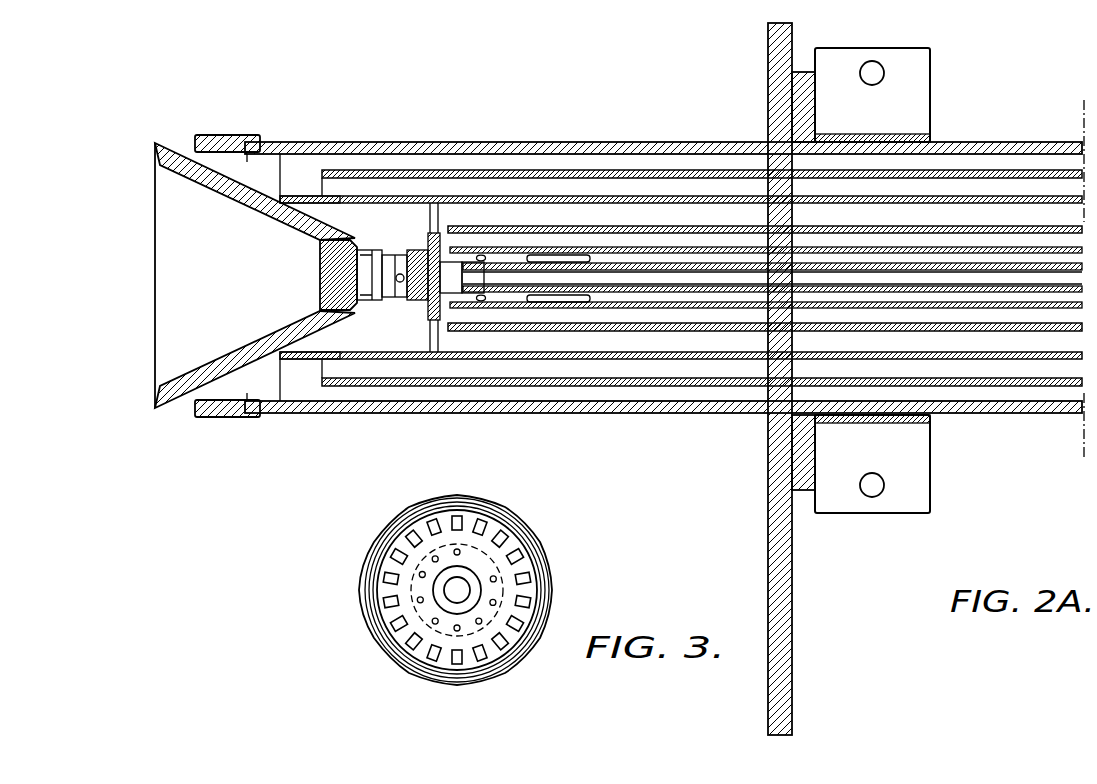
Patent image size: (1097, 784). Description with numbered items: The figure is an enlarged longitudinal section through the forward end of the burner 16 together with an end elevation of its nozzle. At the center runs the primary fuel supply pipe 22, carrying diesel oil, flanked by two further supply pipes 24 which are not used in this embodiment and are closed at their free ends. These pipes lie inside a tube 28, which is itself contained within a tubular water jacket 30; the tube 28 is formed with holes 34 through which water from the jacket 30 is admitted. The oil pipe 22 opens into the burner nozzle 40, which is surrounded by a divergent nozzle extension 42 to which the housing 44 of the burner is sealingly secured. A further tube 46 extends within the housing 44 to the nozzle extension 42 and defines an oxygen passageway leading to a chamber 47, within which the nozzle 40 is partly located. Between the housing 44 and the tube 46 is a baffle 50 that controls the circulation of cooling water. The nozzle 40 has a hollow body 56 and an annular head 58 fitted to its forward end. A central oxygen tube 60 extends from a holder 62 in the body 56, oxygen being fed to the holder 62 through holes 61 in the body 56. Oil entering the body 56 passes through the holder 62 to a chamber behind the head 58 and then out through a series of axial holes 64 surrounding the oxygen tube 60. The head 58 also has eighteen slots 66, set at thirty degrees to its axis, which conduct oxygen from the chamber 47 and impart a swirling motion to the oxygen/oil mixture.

In FIG. 2A, the burner 16 is at (632, 126).
In FIG. 2A, the central primary fuel supply pipe 22 is at (603, 270).
In FIG. 2A, the further supply pipes 24 is at (566, 298).
In FIG. 2A, the tube 28 is at (668, 250).
In FIG. 2A, the tubular water jacket 30 is at (1035, 228).
In FIG. 2A, the holes 34 is at (484, 255).
In FIG. 2A, the burner nozzle 40 is at (306, 265).
In FIG. 3, the burner nozzle 40 is at (378, 620).
In FIG. 2A, the divergent nozzle extension 42 is at (227, 175).
In FIG. 3, the divergent nozzle extension 42 is at (518, 528).
In FIG. 2A, the housing 44 is at (368, 145).
In FIG. 2A, the further tube 46 is at (990, 200).
In FIG. 2A, the chamber 47 is at (330, 200).
In FIG. 2A, the baffle 50 is at (710, 172).
In FIG. 2A, the hollow body 56 is at (431, 300).
In FIG. 2A, the annular head 58 is at (322, 280).
In FIG. 3, the central oxygen tube 60 is at (475, 588).
In FIG. 2A, the holes 61 is at (399, 262).
In FIG. 2A, the holder 62 is at (433, 250).
In FIG. 3, the axial holes 64 is at (418, 599).
In FIG. 2A, the slots 66 is at (362, 284).
In FIG. 3, the slots 66 is at (478, 518).